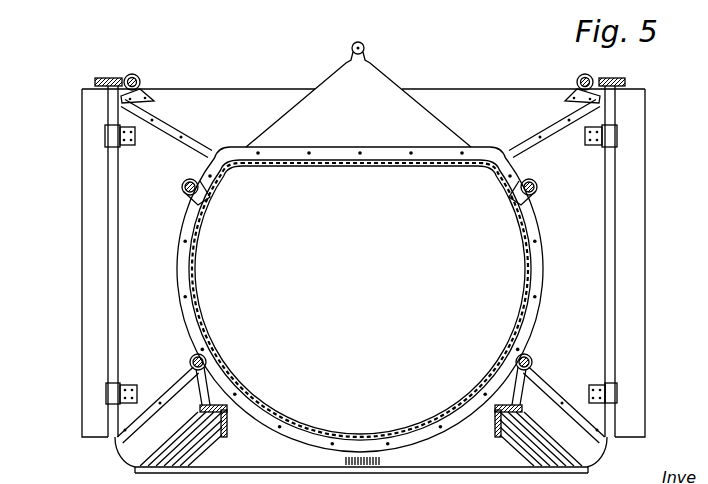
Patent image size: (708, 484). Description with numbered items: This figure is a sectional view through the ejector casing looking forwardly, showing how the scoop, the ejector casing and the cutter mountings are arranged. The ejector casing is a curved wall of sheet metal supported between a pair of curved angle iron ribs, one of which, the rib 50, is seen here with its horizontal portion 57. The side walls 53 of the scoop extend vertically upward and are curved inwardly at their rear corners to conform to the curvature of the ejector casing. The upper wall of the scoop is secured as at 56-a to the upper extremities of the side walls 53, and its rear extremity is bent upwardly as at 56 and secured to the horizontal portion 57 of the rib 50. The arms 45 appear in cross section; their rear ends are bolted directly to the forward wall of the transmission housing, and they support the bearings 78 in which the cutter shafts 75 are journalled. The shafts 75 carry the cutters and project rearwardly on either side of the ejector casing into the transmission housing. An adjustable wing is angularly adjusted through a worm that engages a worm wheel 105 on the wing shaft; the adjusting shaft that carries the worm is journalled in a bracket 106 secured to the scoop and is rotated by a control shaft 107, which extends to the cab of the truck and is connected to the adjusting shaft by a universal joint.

The arm 45 is at (220, 425).
The curved angle iron rib 50 is at (350, 447).
The side wall of the scoop 53 is at (363, 279).
The upwardly bent rear extremity of the upper wall 56 is at (376, 72).
The securing point of the upper wall 56-a is at (203, 153).
The horizontal portion of the rib 57 is at (363, 134).
The cutter shaft 75 is at (182, 187).
The bearing 78 is at (190, 377).
The worm wheel 105 is at (95, 81).
The bracket 106 is at (141, 90).
The control shaft 107 is at (140, 78).